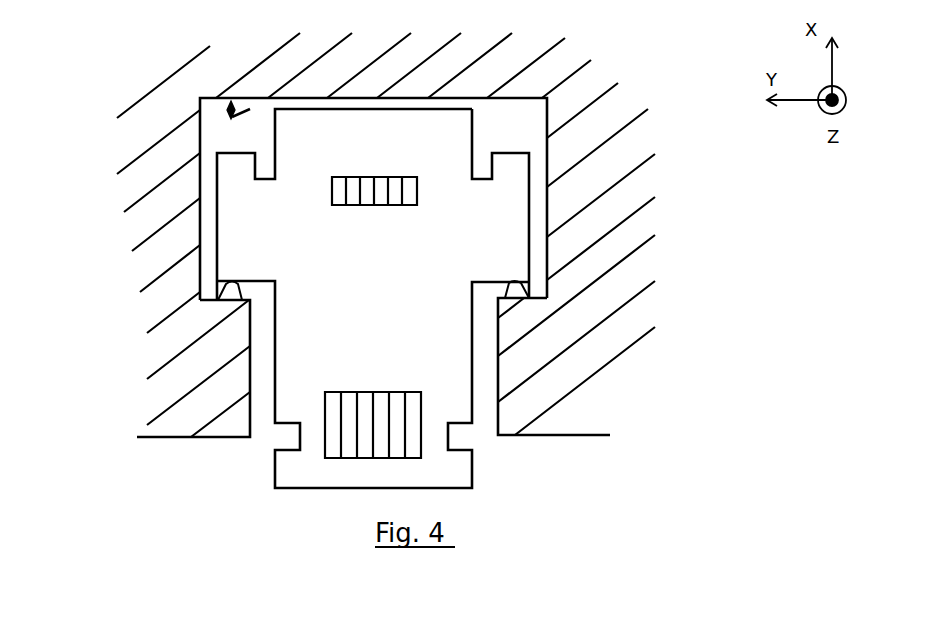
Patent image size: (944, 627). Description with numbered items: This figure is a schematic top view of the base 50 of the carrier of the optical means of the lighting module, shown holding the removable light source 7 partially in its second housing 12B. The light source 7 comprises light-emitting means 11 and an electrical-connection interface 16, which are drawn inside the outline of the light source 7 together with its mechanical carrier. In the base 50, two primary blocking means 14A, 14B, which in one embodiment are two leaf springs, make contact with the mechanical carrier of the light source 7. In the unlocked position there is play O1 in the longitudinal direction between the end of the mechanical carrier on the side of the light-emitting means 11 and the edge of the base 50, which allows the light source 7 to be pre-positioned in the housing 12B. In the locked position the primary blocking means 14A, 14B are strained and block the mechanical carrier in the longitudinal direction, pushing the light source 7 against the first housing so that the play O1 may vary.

The light source 7 is at (402, 275).
The light-emitting means 11 is at (354, 188).
The second housing 12B is at (502, 138).
The primary blocking means 14A is at (214, 300).
The primary blocking means 14B is at (518, 290).
The electrical-connection interface 16 is at (373, 418).
The base 50 is at (623, 198).
The play O1 is at (218, 114).